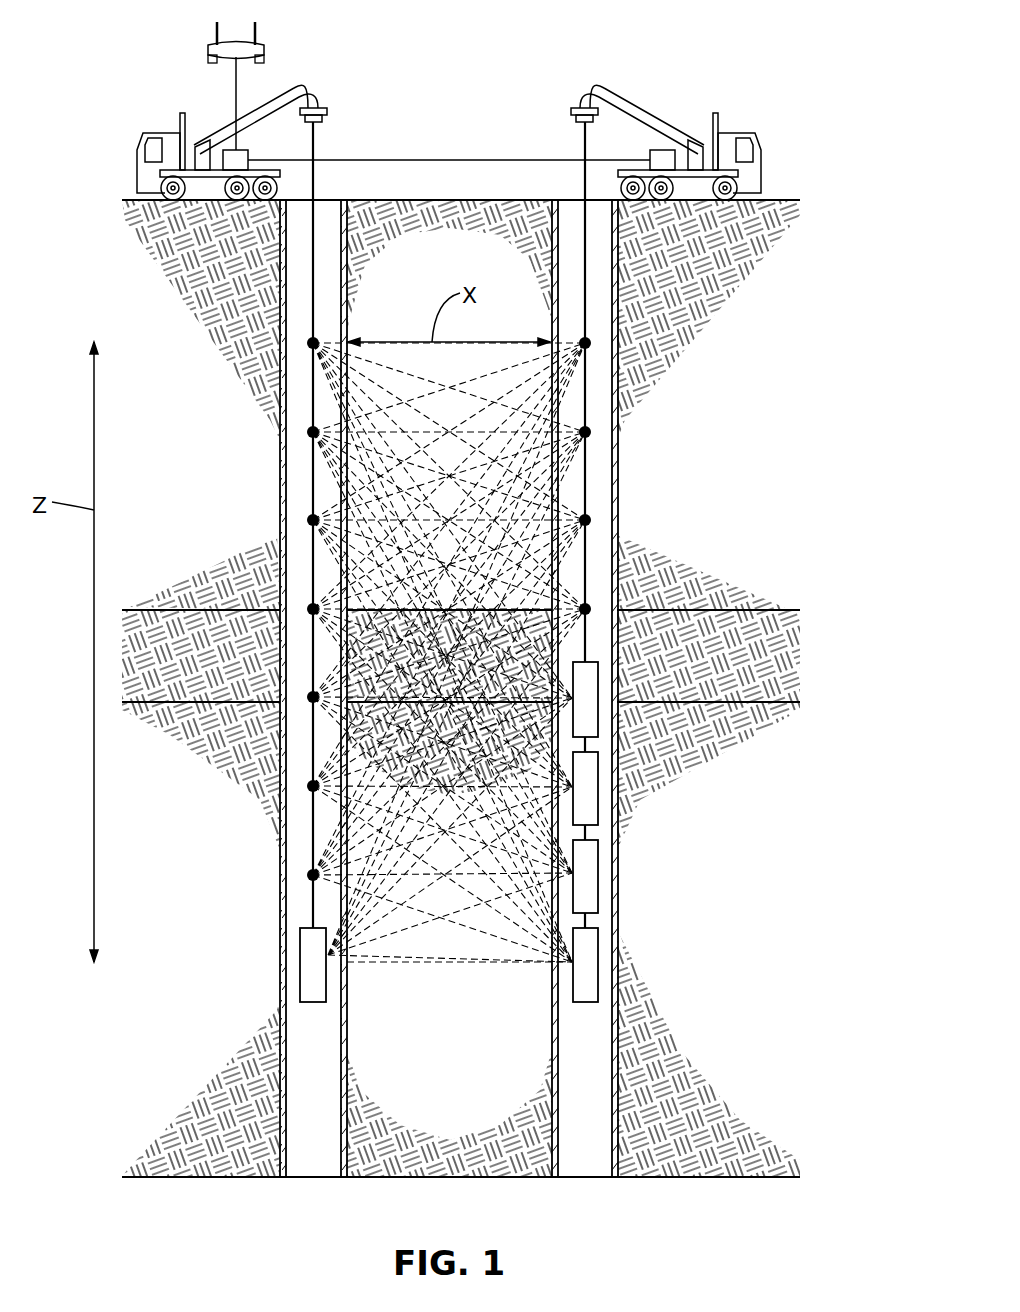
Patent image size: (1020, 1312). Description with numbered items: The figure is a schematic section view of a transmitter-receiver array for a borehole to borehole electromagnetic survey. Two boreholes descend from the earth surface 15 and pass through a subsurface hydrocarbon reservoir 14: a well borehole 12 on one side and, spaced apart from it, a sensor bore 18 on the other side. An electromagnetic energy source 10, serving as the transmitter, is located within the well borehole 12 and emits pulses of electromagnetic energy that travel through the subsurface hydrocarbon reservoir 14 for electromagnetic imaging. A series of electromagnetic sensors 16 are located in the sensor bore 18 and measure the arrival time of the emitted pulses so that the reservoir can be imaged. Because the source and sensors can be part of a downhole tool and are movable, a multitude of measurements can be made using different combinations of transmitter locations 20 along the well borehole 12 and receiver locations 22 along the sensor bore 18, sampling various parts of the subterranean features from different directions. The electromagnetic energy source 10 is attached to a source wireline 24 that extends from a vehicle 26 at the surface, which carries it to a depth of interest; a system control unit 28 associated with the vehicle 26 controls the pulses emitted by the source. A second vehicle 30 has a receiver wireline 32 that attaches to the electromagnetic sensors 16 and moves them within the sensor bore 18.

The electromagnetic energy source 10 is at (300, 967).
The well borehole 12 is at (297, 880).
The subsurface hydrocarbon reservoir 14 is at (758, 652).
The earth surface 15 is at (778, 200).
The electromagnetic sensors 16 is at (598, 875).
The sensor bore 18 is at (603, 384).
The transmitter locations 20 is at (313, 520).
The receiver locations 22 is at (591, 520).
The source wireline 24 is at (313, 408).
The vehicle 26 is at (322, 68).
The system control unit 28 is at (215, 50).
The second vehicle 30 is at (758, 118).
The receiver wireline 32 is at (588, 295).